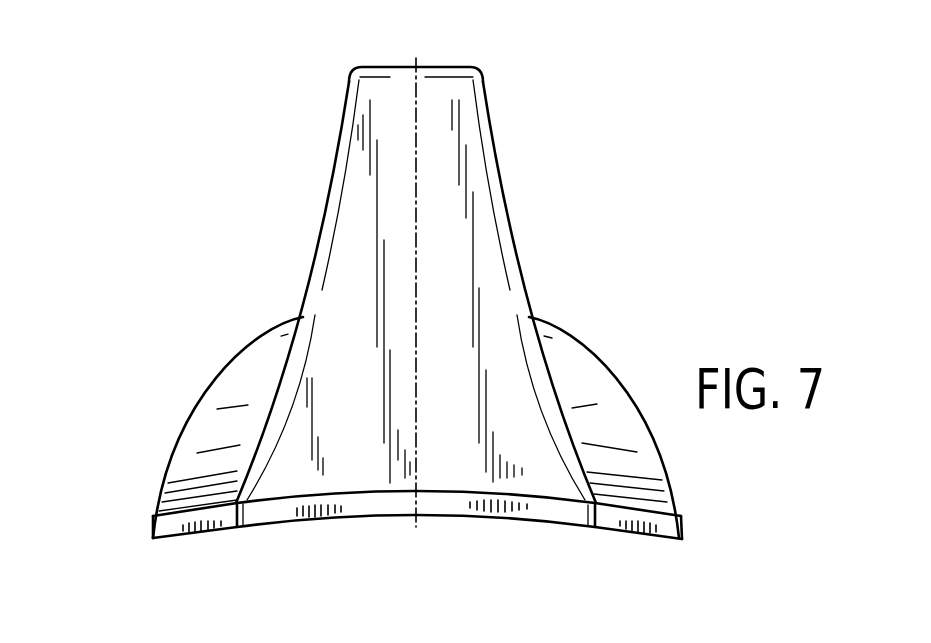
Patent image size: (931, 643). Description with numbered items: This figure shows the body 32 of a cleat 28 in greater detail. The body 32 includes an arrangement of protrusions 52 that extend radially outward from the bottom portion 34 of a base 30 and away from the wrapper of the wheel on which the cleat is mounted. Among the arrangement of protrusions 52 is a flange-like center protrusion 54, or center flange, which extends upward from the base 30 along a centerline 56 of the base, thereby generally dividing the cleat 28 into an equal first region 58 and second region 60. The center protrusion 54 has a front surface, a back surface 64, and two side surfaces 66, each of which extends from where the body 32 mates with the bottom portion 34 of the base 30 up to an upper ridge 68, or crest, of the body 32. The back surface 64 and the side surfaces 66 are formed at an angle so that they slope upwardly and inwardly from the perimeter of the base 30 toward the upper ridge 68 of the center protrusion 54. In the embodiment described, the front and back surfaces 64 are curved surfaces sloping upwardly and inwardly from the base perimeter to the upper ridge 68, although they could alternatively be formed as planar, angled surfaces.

The cleat 28 is at (361, 313).
The base 30 is at (415, 548).
The body 32 is at (410, 274).
The bottom portion 34 is at (307, 523).
The protrusions 52 is at (283, 375).
The center protrusion 54 is at (503, 83).
The centerline 56 is at (415, 502).
The first region 58 is at (287, 210).
The second region 60 is at (533, 233).
The back surface 64 is at (525, 297).
The side surfaces 66 is at (363, 398).
The upper ridge 68 is at (390, 67).